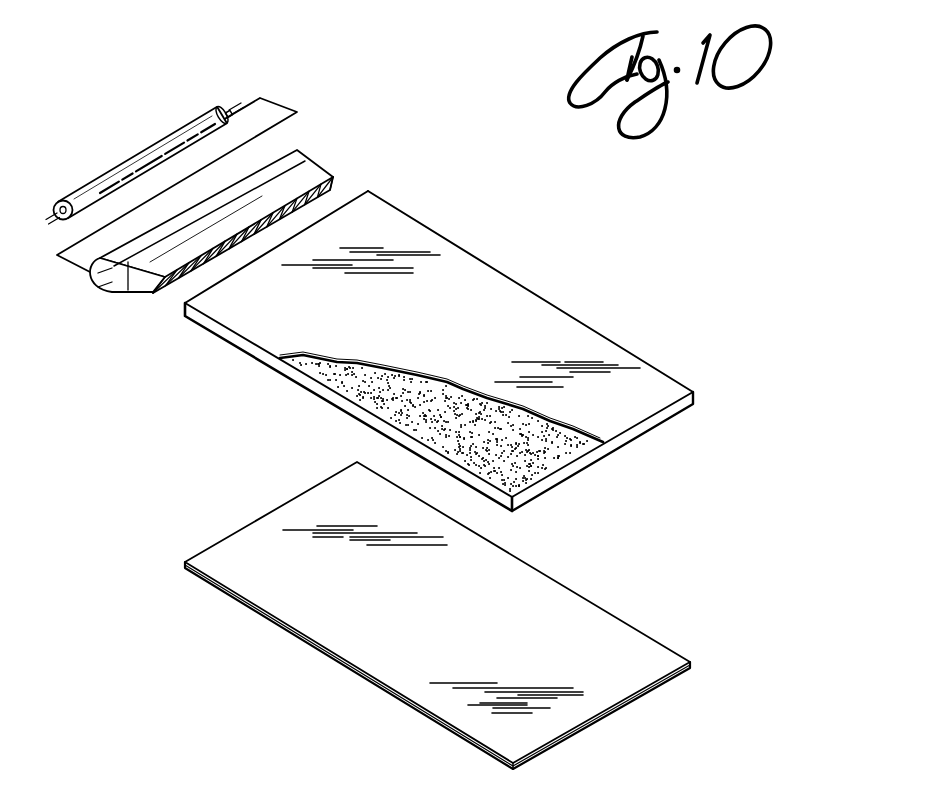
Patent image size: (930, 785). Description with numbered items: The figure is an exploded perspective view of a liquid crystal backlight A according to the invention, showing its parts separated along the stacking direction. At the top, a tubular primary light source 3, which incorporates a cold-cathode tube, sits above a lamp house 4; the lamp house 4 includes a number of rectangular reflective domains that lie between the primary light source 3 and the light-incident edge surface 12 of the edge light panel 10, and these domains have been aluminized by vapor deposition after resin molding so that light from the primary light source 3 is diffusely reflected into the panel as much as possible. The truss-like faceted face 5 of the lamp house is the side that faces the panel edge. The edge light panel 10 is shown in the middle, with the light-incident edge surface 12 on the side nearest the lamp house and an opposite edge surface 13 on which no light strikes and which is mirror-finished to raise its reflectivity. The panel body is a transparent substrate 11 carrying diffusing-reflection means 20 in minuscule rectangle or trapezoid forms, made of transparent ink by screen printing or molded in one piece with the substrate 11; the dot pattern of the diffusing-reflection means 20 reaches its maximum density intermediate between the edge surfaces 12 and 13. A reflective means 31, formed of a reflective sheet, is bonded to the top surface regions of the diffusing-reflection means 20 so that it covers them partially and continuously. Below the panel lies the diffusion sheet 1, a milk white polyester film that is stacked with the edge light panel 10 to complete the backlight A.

The diffusion sheet 1 is at (345, 665).
The primary light source 3 is at (140, 165).
The lamp house 4 is at (108, 285).
The light emitting surface of lamp housing 5 is at (335, 190).
The edge light panel 10 is at (560, 297).
The transparent substrate 11 is at (322, 395).
The light-incident edge surface 12 is at (215, 280).
The edge surface 13 is at (655, 432).
The diffusing-reflection means 20 is at (540, 455).
The reflective means 31 is at (300, 358).
The liquid crystal backlight A is at (318, 125).